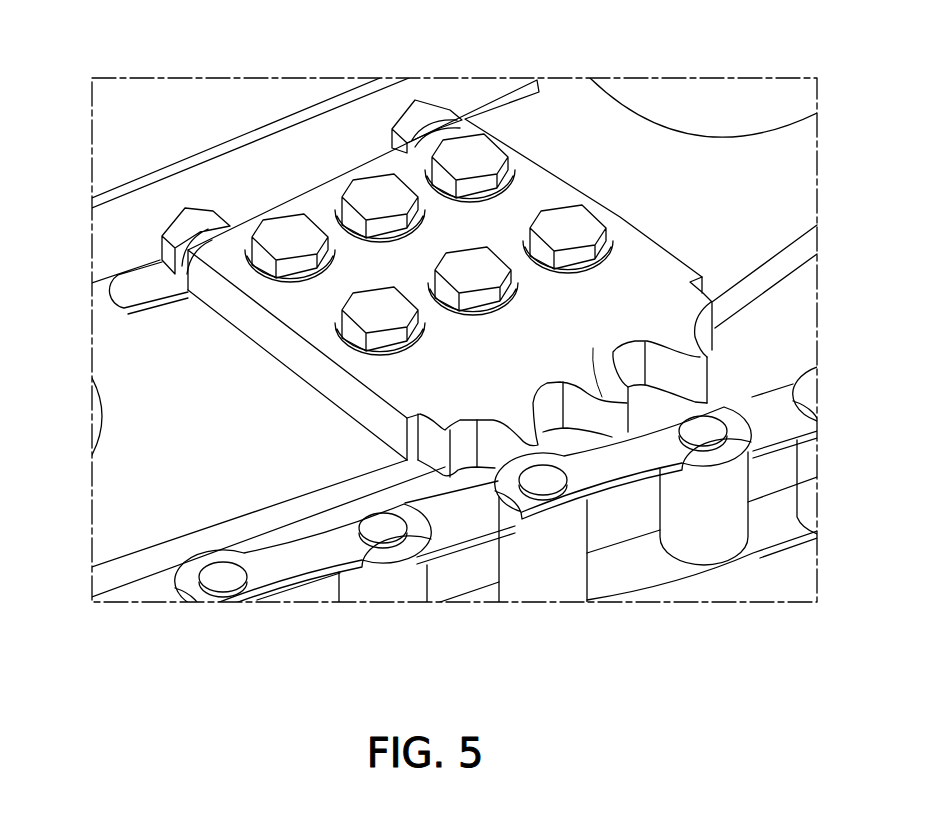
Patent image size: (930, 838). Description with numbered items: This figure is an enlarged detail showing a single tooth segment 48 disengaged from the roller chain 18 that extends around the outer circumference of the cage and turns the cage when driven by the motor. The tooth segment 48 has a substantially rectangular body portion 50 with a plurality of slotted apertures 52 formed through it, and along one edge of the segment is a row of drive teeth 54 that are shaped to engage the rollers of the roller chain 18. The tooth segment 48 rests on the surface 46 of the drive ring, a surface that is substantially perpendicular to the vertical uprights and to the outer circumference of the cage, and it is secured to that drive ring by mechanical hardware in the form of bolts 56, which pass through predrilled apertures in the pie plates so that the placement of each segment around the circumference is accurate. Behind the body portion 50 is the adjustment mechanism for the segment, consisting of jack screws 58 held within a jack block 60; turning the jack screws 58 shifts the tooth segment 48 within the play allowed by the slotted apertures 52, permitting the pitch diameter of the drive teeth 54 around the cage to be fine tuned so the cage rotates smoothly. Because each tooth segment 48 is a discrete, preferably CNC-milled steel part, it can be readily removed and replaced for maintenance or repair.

The roller chain 18 is at (550, 572).
The surface 46 is at (167, 510).
The tooth segment 48 is at (242, 353).
The body portion 50 is at (327, 408).
The slotted aperture 52 is at (513, 183).
The drive tooth 54 is at (670, 345).
The bolt 56 is at (482, 157).
The jack screw 58 is at (442, 120).
The jack block 60 is at (107, 267).